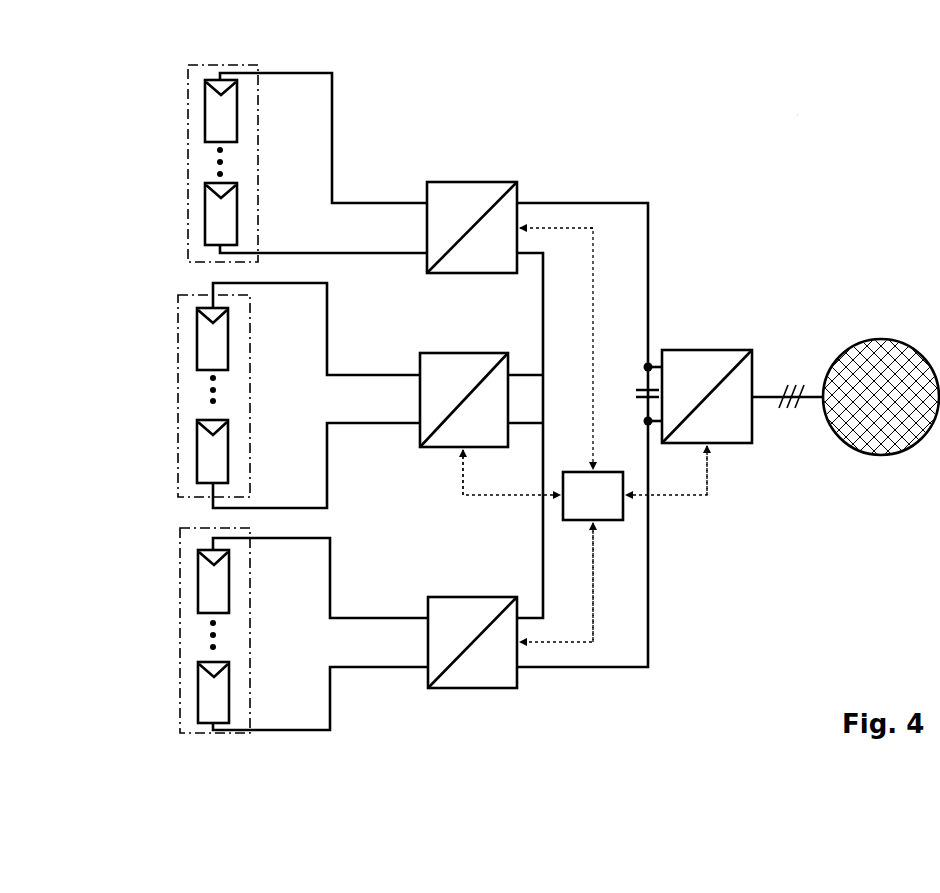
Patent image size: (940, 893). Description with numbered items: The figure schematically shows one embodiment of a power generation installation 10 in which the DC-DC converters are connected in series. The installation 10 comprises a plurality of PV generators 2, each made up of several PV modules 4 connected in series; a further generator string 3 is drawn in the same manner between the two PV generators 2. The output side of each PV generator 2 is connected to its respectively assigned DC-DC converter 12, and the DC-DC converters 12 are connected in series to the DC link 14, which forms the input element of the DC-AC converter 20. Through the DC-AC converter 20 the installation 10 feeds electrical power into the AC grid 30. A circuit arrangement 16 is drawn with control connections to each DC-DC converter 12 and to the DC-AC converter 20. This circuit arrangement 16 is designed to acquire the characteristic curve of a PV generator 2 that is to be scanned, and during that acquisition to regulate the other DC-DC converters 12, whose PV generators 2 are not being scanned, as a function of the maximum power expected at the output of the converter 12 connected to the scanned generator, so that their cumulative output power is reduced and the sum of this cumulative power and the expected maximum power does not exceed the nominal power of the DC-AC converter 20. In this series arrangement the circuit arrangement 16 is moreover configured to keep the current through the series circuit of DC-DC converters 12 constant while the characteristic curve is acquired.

The PV generator 2 is at (188, 162).
The photovoltaic string 3 is at (178, 395).
The PV module 4 is at (226, 127).
The power generation installation 10 is at (798, 113).
The DC-DC converter 12 is at (467, 180).
The DC link 14 is at (645, 385).
The circuit arrangement 16 is at (602, 504).
The DC-AC converter 20 is at (705, 349).
The AC grid 30 is at (884, 338).